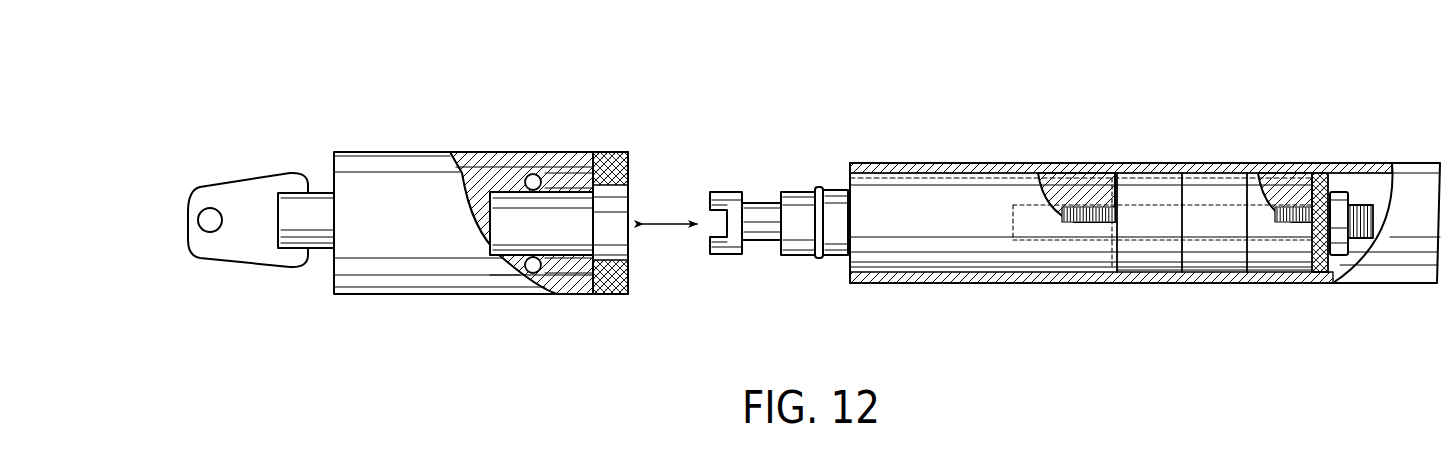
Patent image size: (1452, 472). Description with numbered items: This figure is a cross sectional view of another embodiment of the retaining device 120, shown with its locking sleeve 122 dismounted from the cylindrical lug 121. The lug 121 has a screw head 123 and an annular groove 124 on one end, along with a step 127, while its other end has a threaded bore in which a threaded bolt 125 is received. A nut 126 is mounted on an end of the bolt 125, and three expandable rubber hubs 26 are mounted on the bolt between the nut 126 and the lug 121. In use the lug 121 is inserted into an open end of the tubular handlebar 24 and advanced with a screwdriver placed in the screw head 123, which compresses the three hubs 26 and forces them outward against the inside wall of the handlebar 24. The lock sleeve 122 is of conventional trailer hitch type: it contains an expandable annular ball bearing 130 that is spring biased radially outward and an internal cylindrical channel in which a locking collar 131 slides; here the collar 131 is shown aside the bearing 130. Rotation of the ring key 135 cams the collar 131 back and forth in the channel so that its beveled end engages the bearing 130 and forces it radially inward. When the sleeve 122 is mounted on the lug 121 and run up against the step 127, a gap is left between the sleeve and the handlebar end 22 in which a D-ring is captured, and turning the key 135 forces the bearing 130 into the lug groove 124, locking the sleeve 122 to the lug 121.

The retaining device 120 is at (665, 110).
The locking sleeve 122 is at (442, 118).
The ring key 135 is at (247, 190).
The locking collar 131 is at (493, 168).
The annular ball bearing 130 is at (532, 172).
The screw head 123 is at (720, 192).
The annular groove 124 is at (750, 275).
The step 127 is at (820, 260).
The handlebar end 22 is at (850, 168).
The handlebar 24 is at (992, 165).
The cylindrical lug 121 is at (1062, 188).
The expandable rubber hubs 26 is at (1148, 258).
The nut 126 is at (1342, 193).
The threaded bolt 125 is at (1358, 240).